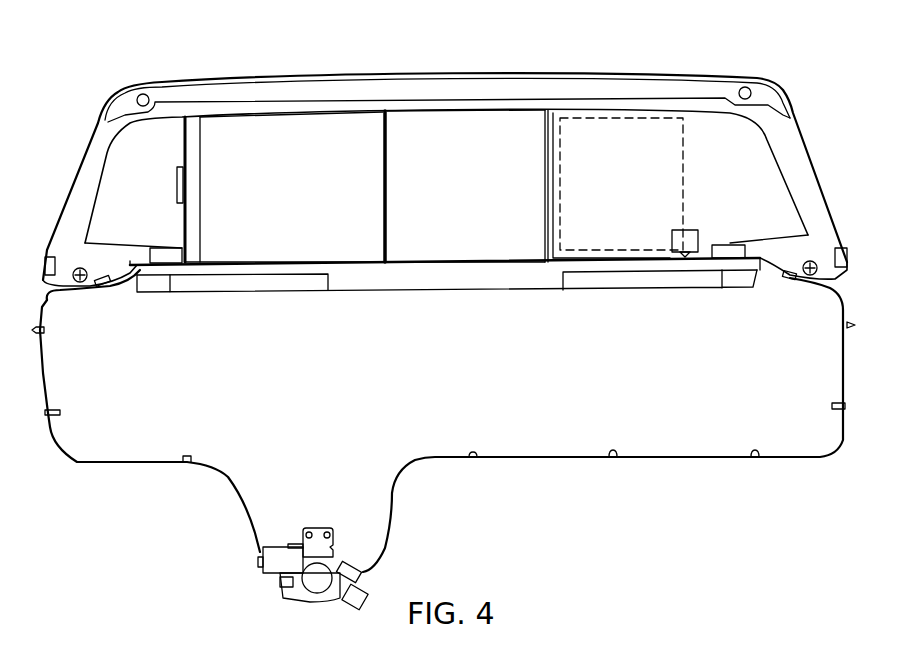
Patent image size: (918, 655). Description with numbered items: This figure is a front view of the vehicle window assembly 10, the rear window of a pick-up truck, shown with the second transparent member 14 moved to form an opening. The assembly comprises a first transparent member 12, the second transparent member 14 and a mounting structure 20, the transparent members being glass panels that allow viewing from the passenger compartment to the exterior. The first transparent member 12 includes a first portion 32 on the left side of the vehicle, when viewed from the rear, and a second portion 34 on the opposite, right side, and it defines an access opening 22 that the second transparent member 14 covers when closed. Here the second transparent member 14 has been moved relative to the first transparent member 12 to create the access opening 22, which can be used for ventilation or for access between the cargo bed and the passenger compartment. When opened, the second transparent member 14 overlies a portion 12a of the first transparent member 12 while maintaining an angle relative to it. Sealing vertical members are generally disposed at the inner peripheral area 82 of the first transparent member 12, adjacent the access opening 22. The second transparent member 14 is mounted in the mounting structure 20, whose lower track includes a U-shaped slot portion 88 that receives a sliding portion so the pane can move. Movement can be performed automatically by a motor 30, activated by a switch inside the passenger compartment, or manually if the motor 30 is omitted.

The vehicle window assembly 10 is at (679, 66).
The first transparent member 12 is at (193, 147).
The portion of the first transparent member 12a is at (242, 145).
The second transparent member 14 is at (603, 133).
The mounting structure 20 is at (498, 273).
The access opening 22 is at (498, 133).
The motor 30 is at (320, 528).
The first portion 32 is at (333, 145).
The second portion 34 is at (768, 210).
The inner peripheral area 82 is at (545, 203).
The U-shaped slot portion 88 is at (388, 148).